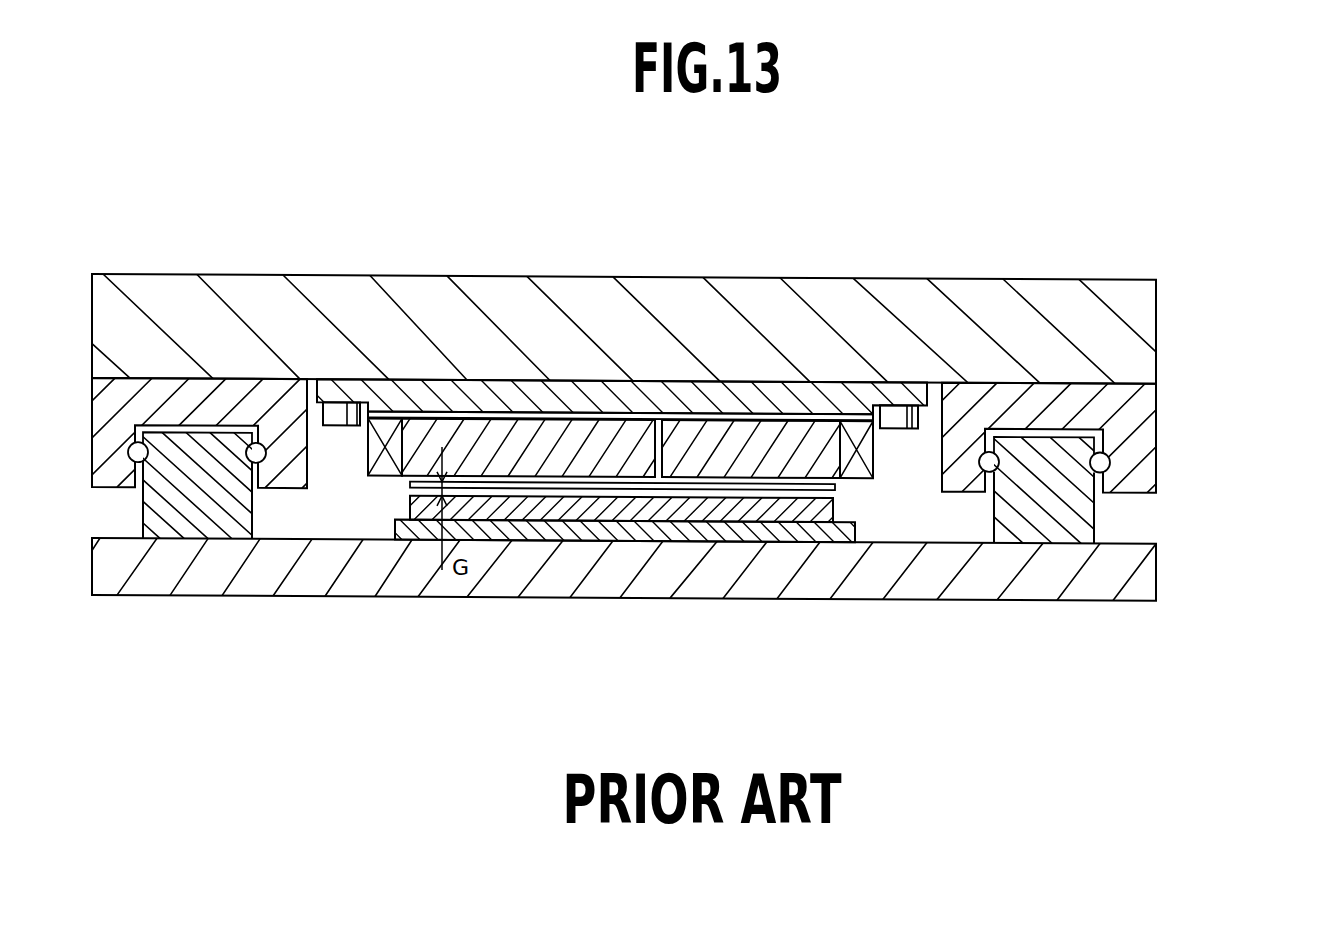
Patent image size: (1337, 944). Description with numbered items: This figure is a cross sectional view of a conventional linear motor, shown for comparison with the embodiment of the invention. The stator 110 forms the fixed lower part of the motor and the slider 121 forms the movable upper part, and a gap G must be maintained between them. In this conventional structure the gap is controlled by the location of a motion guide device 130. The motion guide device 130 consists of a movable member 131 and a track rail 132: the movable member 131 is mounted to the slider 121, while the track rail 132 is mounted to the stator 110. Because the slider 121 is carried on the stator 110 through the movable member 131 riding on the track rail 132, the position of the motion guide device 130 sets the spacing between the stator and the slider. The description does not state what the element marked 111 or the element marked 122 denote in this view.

The stator 110 is at (1138, 578).
The lower electrode plate / wafer stage 111 is at (835, 522).
The slider 121 is at (1140, 344).
The upper electrode block 122 is at (813, 448).
The motion guide device 130 is at (665, 460).
The movable member 131 is at (1137, 477).
The track rail 132 is at (1085, 525).